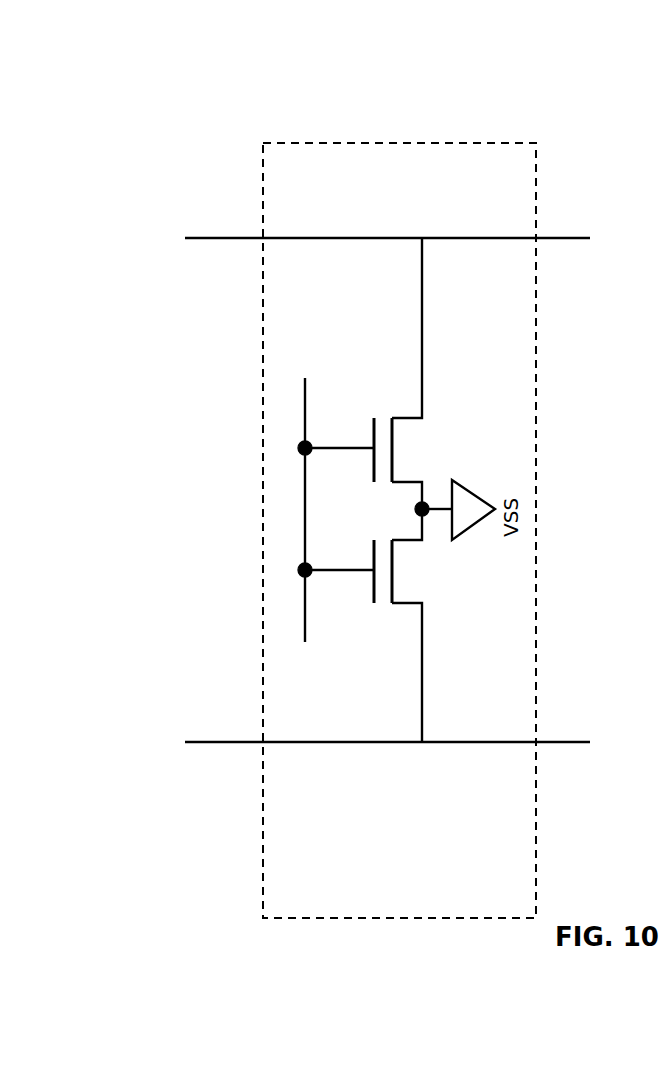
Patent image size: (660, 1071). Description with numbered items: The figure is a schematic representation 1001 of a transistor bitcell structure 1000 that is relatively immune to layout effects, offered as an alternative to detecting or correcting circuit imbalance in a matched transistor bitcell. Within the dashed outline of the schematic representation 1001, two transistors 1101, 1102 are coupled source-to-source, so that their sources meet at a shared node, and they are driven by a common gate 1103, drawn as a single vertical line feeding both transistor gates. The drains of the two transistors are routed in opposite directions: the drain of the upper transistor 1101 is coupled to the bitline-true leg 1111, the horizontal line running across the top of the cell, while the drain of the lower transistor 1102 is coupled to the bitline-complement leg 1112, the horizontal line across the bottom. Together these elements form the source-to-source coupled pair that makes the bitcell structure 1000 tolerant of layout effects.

The transistor bitcell structure 1000 is at (247, 67).
The schematic representation 1001 is at (341, 142).
The transistor 1101 is at (406, 417).
The transistor 1102 is at (401, 605).
The common gate 1103 is at (305, 399).
The bitline-true leg 1111 is at (562, 238).
The bitline-complement leg 1112 is at (562, 742).